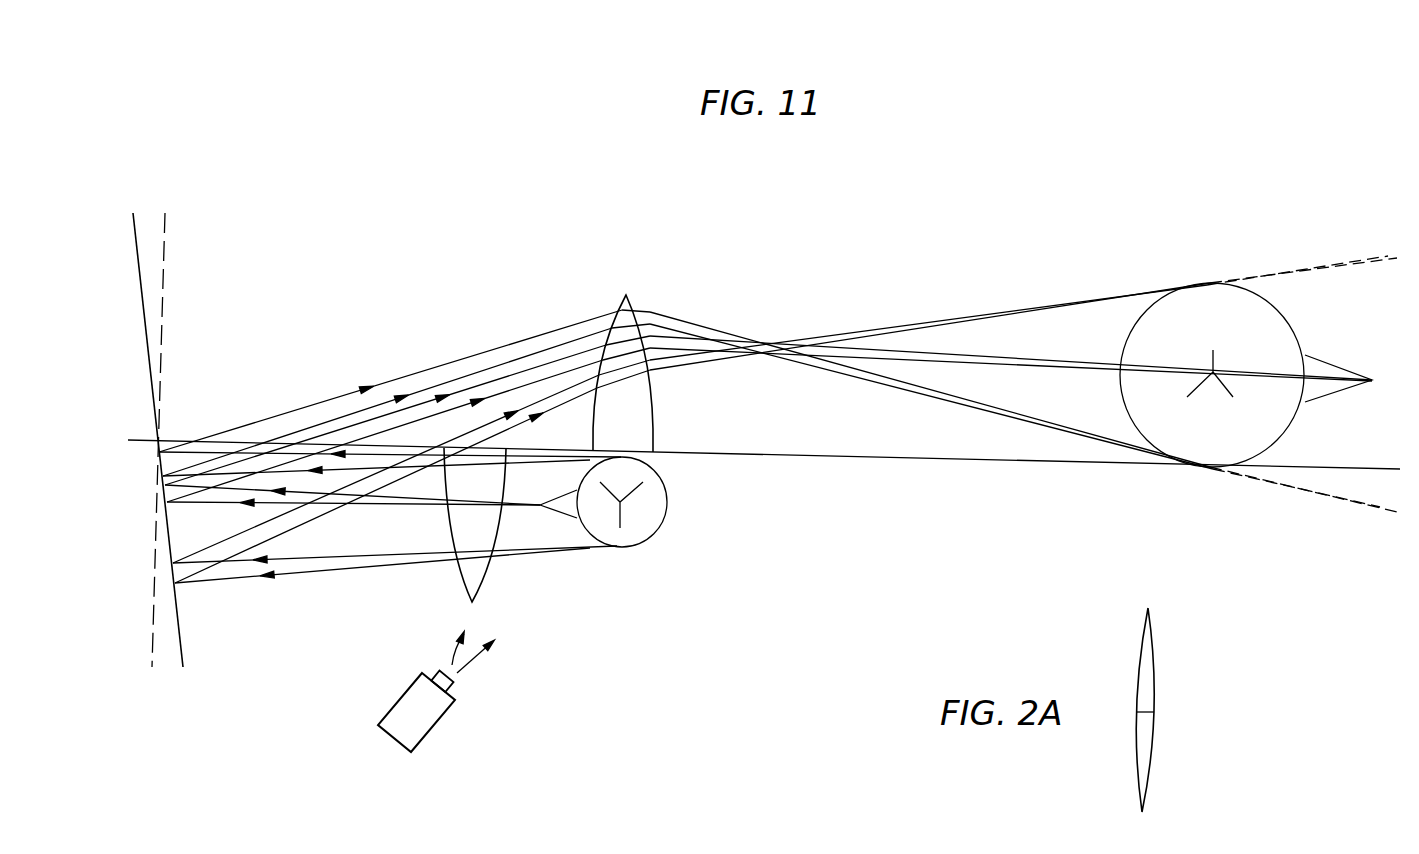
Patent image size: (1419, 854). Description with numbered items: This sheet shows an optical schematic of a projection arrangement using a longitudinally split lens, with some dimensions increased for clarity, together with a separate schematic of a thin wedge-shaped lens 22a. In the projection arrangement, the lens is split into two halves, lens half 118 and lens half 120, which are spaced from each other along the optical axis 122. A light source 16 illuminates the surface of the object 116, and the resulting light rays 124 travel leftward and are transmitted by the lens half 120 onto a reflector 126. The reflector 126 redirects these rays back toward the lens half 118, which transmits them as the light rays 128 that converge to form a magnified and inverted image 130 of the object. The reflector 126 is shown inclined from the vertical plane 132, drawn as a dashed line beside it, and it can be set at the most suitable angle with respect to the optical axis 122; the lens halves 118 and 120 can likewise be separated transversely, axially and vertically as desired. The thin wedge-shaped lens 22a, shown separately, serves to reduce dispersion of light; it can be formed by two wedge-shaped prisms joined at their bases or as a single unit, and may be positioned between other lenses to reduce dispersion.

In FIG. 11, the light source 16 is at (403, 692).
In FIG. 11, the object 116 is at (667, 516).
In FIG. 11, the lens half 118 is at (648, 428).
In FIG. 11, the lens half 120 is at (452, 537).
In FIG. 11, the optical axis 122 is at (981, 462).
In FIG. 11, the light rays 124 is at (523, 556).
In FIG. 11, the reflector 126 is at (143, 304).
In FIG. 11, the transmitted light rays 128 is at (886, 332).
In FIG. 11, the image 130 is at (1270, 308).
In FIG. 11, the vertical plane 132 is at (163, 258).
In FIG. 2A, the lens 22a is at (1155, 685).